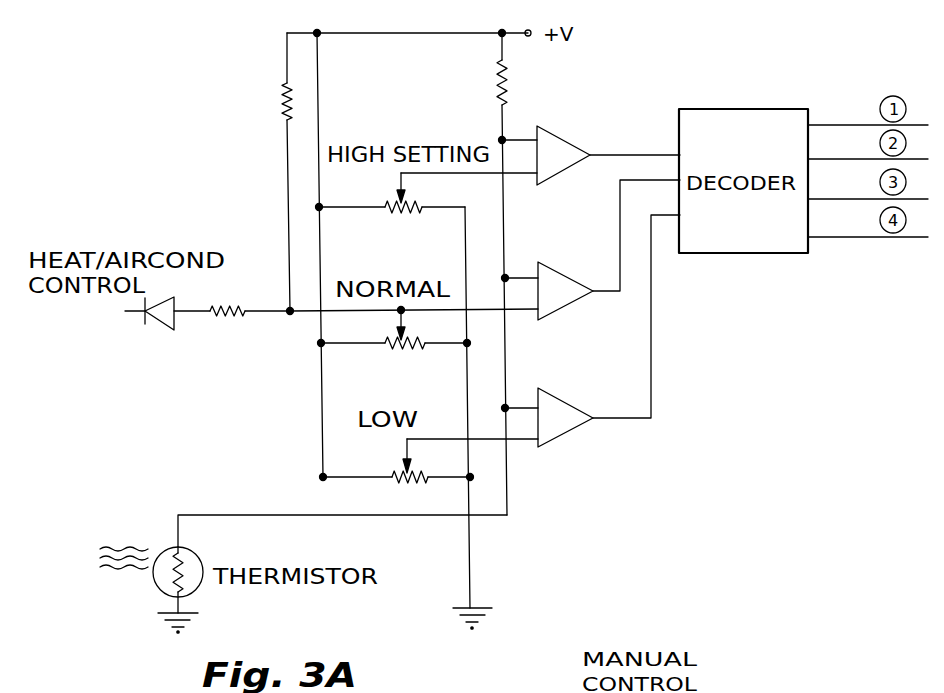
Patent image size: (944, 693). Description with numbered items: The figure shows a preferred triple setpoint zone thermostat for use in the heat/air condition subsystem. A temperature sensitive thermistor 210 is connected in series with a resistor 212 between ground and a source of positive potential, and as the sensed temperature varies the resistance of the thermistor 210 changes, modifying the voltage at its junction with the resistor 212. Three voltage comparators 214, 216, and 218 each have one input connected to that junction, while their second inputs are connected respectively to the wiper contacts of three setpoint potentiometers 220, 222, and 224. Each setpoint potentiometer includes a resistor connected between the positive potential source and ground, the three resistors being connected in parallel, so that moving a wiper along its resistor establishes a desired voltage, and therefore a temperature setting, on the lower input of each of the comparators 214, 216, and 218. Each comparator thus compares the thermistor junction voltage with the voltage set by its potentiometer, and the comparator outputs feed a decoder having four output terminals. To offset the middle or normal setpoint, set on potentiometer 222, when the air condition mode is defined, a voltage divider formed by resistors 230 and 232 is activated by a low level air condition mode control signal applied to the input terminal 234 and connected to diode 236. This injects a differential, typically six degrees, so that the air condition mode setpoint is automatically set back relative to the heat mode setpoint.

The thermistor 210 is at (190, 553).
The resistor 212 is at (507, 84).
The voltage comparator 214 is at (546, 130).
The voltage comparator 216 is at (546, 266).
The voltage comparator 218 is at (548, 394).
The setpoint potentiometer 220 is at (422, 196).
The setpoint potentiometer 222 is at (390, 330).
The setpoint potentiometer 224 is at (392, 466).
The resistor 230 is at (282, 100).
The resistor 232 is at (218, 306).
The input terminal 234 is at (140, 316).
The diode 236 is at (165, 328).